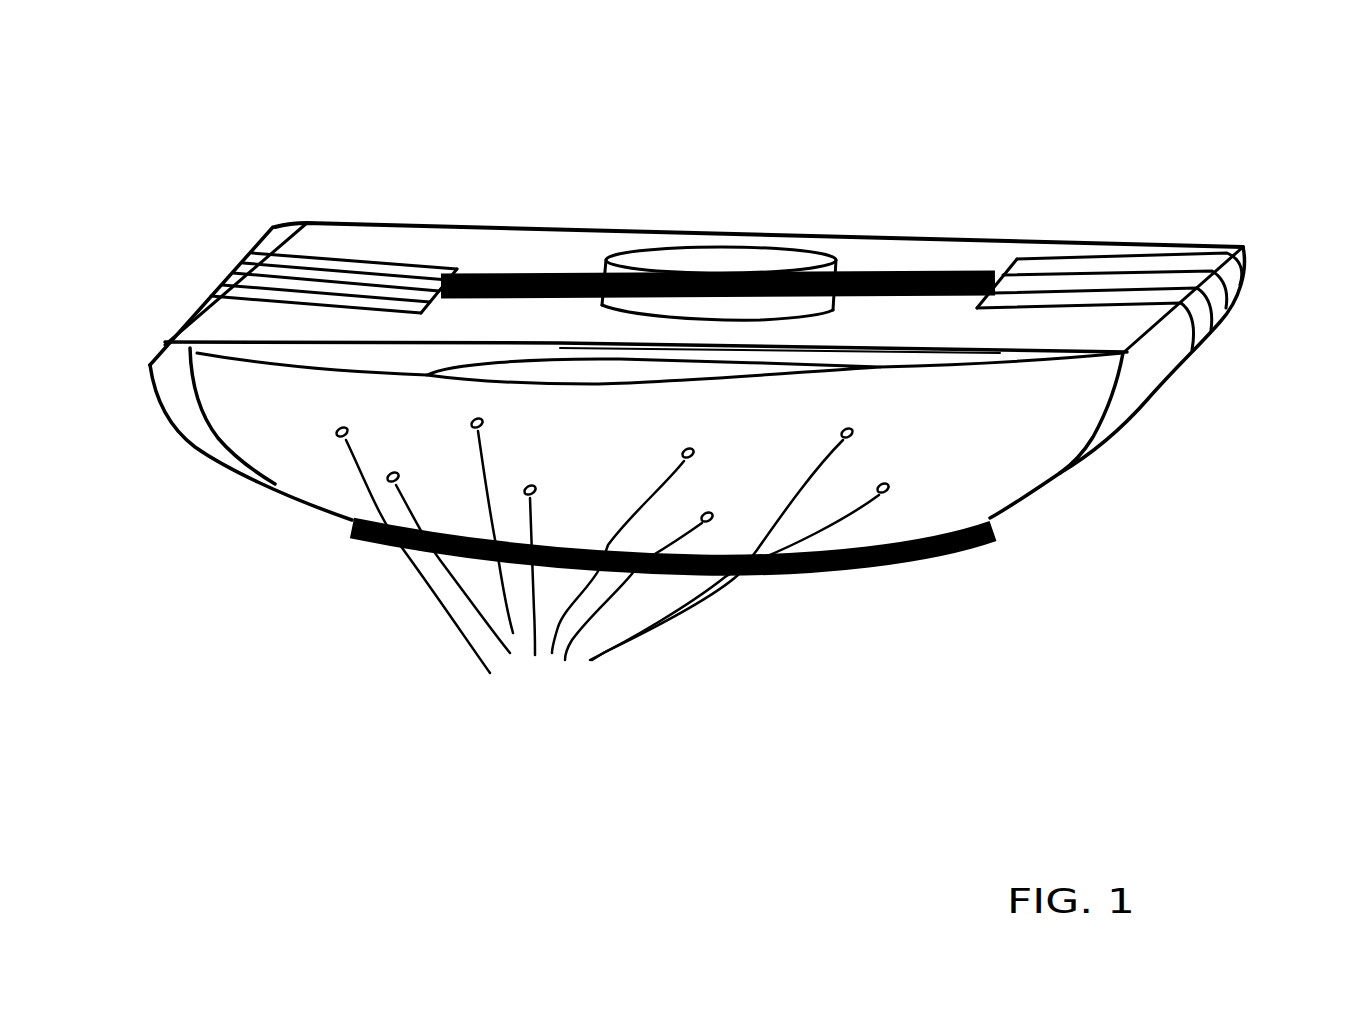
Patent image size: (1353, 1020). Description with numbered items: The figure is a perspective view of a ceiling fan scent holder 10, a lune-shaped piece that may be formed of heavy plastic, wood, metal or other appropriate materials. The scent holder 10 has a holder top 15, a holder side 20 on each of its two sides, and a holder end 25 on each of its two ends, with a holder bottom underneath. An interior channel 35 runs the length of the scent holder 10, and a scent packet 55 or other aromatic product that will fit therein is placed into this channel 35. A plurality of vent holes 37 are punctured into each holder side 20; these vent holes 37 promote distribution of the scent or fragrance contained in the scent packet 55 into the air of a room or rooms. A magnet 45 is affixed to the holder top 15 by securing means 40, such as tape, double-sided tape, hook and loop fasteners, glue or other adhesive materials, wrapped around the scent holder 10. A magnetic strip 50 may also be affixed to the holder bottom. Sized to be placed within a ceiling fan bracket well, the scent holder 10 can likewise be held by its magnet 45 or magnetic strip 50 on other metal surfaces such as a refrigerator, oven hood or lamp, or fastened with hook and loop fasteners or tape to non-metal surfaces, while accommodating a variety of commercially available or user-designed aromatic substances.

The ceiling fan scent holder 10 is at (1143, 157).
The holder top 15 is at (1140, 262).
The holder side 20 is at (1003, 467).
The holder end 25 is at (185, 392).
The interior channel 35 is at (312, 357).
The vent hole 37 is at (612, 568).
The securing means 40 is at (372, 292).
The magnet 45 is at (733, 265).
The magnetic strip 50 is at (925, 290).
The scent packet 55 is at (592, 375).